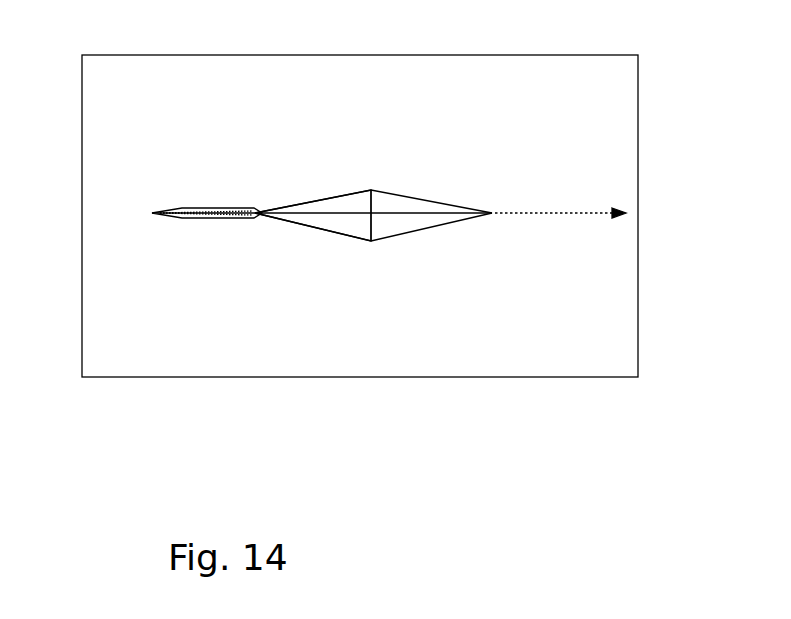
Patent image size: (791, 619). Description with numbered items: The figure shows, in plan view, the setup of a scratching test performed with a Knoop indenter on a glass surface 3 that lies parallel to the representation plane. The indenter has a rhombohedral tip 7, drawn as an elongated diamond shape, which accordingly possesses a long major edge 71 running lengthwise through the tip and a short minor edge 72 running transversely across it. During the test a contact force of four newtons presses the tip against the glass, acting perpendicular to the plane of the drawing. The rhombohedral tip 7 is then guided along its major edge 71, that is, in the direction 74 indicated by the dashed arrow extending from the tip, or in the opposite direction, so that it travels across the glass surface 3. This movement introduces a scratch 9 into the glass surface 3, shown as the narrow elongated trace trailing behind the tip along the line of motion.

The glass surface 3 is at (473, 342).
The rhombohedral tip 7 is at (254, 184).
The major edge 71 is at (345, 213).
The minor edge 72 is at (375, 213).
The direction 74 is at (574, 213).
The scratch 9 is at (222, 218).